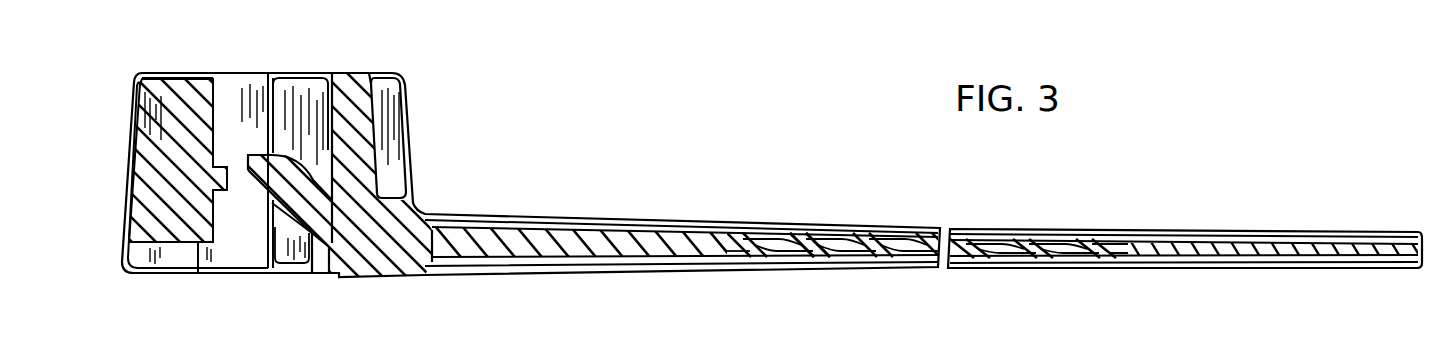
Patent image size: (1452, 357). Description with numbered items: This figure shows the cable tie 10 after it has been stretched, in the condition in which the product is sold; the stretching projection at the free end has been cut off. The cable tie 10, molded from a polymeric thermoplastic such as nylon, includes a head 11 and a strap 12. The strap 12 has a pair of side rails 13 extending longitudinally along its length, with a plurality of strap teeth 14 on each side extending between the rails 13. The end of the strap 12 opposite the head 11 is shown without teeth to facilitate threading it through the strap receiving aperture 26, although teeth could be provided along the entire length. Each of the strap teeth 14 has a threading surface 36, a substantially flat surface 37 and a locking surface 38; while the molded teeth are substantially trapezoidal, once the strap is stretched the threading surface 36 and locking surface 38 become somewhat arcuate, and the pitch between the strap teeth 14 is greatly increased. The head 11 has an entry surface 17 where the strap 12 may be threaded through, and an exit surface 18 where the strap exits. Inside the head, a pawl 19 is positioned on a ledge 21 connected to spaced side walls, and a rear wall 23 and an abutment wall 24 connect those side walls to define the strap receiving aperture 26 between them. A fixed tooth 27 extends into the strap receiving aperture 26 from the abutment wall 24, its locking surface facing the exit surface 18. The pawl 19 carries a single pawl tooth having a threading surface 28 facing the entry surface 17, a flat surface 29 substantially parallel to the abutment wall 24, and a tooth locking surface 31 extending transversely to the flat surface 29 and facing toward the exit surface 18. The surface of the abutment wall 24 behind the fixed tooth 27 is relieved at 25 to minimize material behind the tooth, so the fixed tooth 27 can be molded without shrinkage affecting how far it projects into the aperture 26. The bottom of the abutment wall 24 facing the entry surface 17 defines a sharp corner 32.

The cable tie 10 is at (636, 182).
The head 11 is at (368, 64).
The strap 12 is at (1168, 212).
The side rails 13 is at (481, 214).
The strap teeth 14 is at (738, 234).
The entry surface 17 is at (253, 275).
The exit surface 18 is at (234, 73).
The pawl 19 is at (284, 193).
The ledge 21 is at (323, 245).
The rear wall 23 is at (362, 99).
The abutment wall 24 is at (150, 82).
The relieved surface 25 is at (158, 140).
The strap receiving aperture 26 is at (230, 232).
The fixed tooth 27 is at (203, 166).
The threading surface 28 is at (243, 186).
The flat surface 29 is at (240, 152).
The tooth locking surface 31 is at (256, 152).
The sharp corner 32 is at (160, 217).
The threading surface 36 is at (788, 234).
The flat surface 37 is at (784, 234).
The locking surface 38 is at (769, 234).